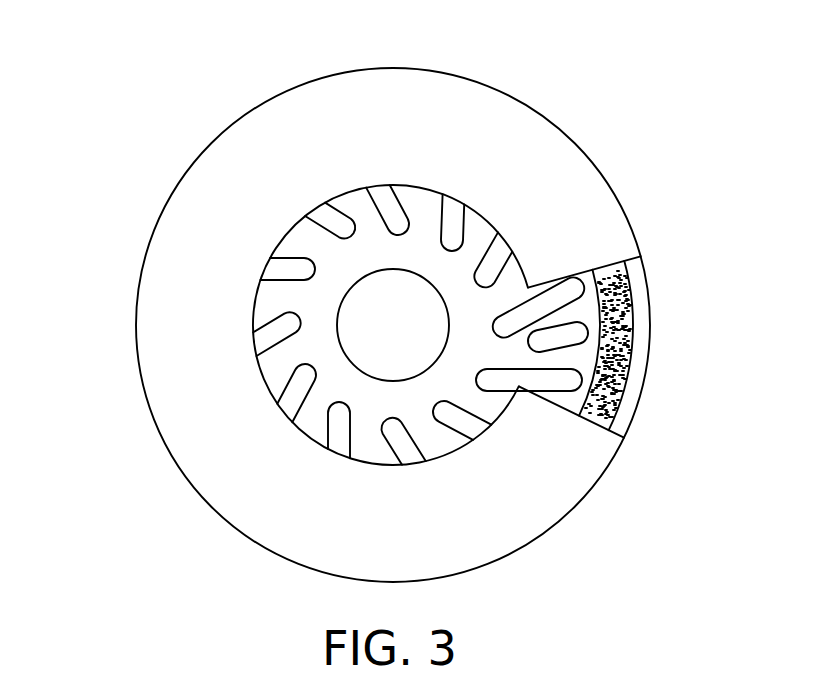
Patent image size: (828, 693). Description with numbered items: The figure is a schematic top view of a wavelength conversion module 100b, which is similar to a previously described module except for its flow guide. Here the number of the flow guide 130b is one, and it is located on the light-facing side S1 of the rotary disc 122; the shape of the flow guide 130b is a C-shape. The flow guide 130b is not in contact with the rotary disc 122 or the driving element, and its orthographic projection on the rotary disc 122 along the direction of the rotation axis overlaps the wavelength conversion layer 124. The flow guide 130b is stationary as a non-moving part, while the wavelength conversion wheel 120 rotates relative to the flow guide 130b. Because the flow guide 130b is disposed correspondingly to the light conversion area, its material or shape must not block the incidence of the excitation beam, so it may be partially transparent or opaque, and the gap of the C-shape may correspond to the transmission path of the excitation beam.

The wavelength conversion module 100b is at (660, 612).
The flow guide 130b is at (158, 338).
The light-facing side S1 is at (423, 237).
The wavelength conversion wheel 120 is at (629, 297).
The rotary disc 122 is at (475, 237).
The wavelength conversion layer 124 is at (653, 338).